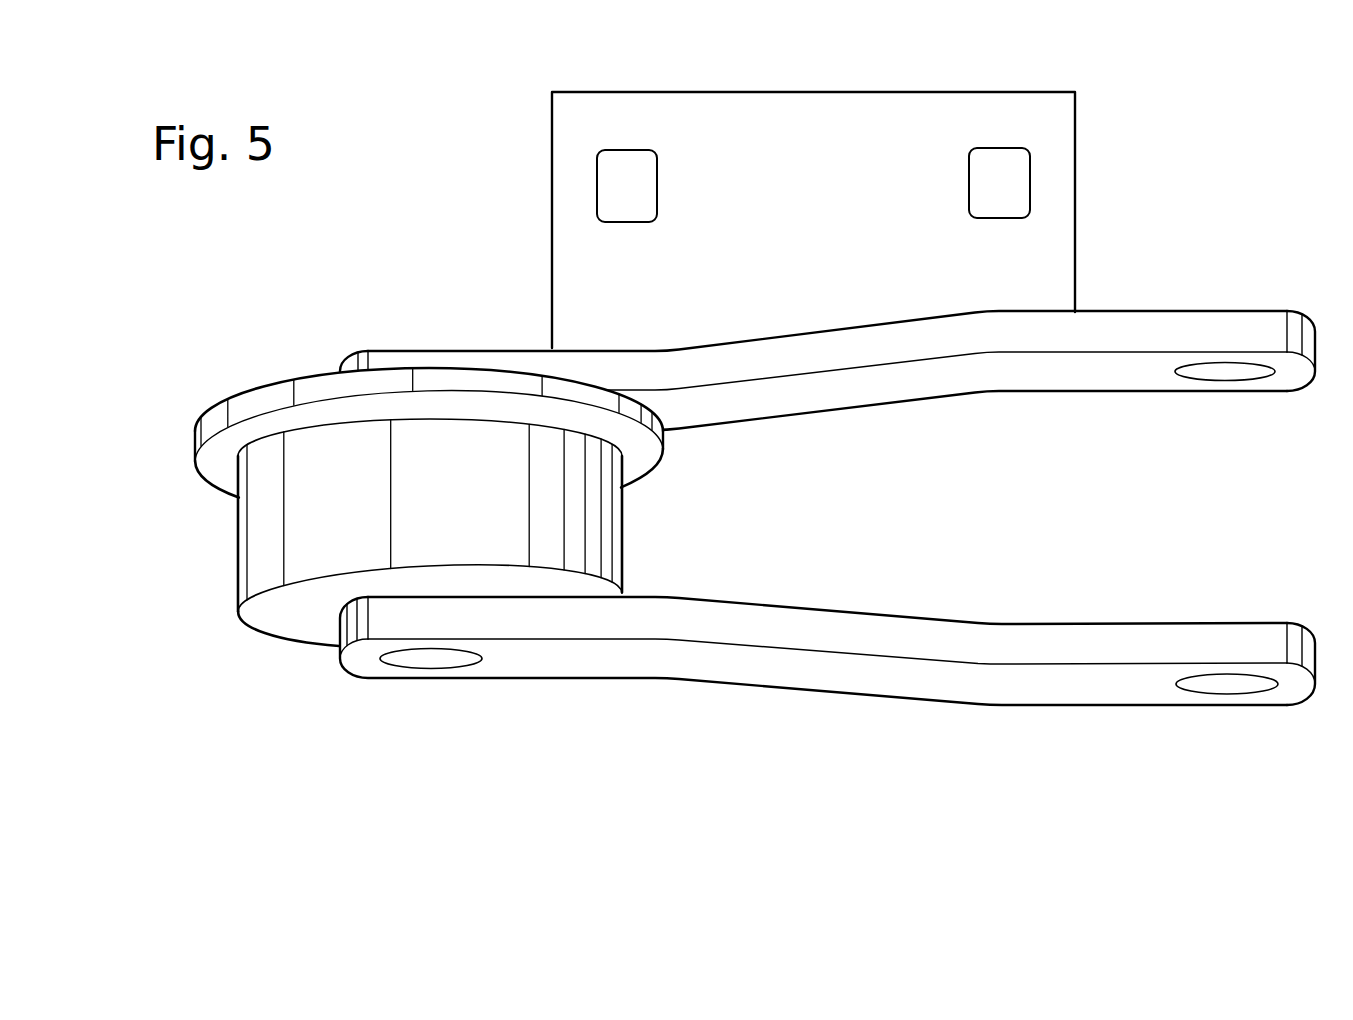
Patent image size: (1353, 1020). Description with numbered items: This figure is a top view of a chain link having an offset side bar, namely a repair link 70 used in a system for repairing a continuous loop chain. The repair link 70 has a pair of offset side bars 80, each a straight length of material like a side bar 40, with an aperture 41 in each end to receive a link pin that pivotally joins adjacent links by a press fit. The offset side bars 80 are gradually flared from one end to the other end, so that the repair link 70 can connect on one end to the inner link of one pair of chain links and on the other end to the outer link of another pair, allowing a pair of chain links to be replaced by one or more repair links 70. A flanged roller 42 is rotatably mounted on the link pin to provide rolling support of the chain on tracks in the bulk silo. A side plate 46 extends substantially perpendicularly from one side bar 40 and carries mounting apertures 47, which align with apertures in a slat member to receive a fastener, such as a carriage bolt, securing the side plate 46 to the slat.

The side bar 40 is at (1148, 327).
The aperture 41 is at (1223, 372).
The roller 42 is at (302, 510).
The side plate 46 is at (822, 165).
The mounting aperture 47 is at (627, 172).
The repair link 70 is at (419, 176).
The offset side bar 80 is at (750, 731).